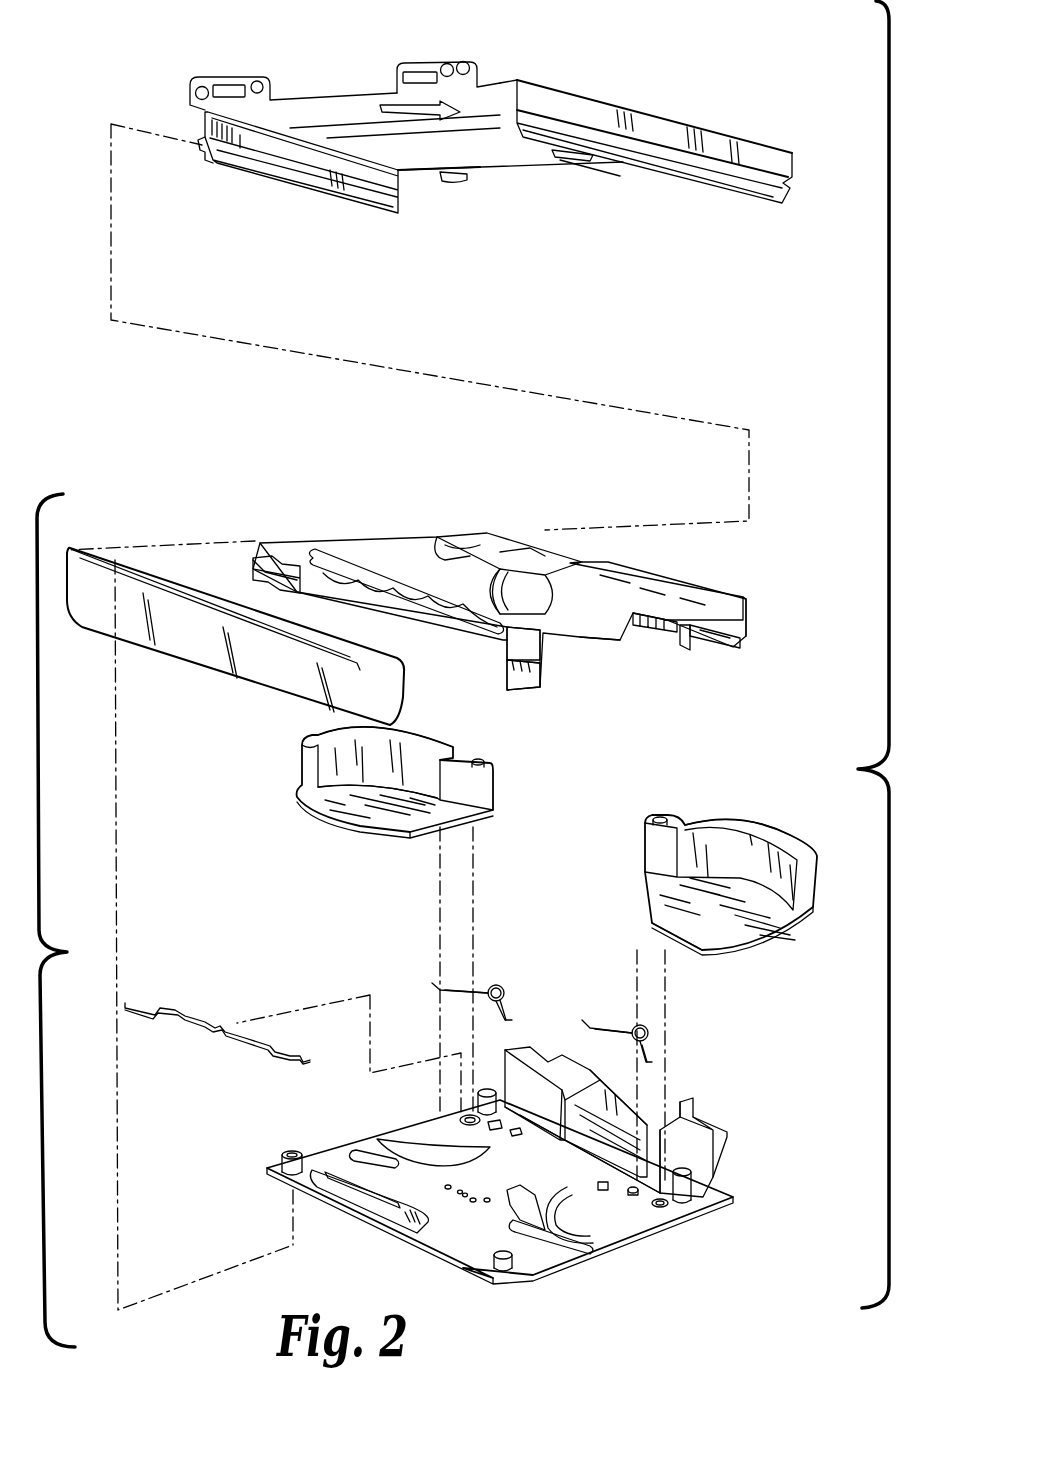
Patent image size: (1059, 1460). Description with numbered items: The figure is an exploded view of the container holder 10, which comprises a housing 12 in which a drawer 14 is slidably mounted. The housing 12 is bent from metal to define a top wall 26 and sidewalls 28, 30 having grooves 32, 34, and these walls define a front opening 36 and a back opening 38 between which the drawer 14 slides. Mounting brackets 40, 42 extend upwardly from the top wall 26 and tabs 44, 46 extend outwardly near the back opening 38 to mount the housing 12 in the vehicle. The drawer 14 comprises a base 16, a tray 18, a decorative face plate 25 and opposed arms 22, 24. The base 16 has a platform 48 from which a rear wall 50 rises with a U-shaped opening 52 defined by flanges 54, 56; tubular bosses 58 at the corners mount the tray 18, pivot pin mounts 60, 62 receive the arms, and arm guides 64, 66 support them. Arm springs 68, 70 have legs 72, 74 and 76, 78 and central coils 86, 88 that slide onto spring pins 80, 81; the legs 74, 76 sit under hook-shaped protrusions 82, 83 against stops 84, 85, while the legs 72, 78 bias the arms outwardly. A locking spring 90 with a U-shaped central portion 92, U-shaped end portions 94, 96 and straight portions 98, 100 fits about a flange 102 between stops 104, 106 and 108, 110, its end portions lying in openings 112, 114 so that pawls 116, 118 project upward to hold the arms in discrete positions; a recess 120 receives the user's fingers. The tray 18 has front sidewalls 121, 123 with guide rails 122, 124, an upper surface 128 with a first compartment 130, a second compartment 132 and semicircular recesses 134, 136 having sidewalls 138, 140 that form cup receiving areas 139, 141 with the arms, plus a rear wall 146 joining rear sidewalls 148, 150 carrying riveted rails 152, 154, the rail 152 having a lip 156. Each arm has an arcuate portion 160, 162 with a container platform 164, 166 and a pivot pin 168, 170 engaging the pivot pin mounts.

The container holder 10 is at (854, 654).
The housing 12 is at (603, 97).
The drawer 14 is at (66, 920).
The base 16 is at (400, 1250).
The tray 18 is at (487, 520).
The arm 22 is at (812, 911).
The arm 24 is at (295, 765).
The decorative face plate 25 is at (100, 552).
The top wall 26 is at (485, 160).
The sidewall 28 is at (730, 172).
The sidewall 30 is at (310, 175).
The groove 32 is at (513, 130).
The groove 34 is at (212, 165).
The front opening 36 is at (360, 117).
The back opening 38 is at (418, 210).
The mounting bracket 40 is at (455, 60).
The mounting bracket 42 is at (230, 80).
The tab 44 is at (660, 178).
The tab 46 is at (462, 183).
The platform 48 is at (535, 1285).
The rear wall 50 is at (530, 1070).
The U-shaped opening 52 is at (685, 1085).
The flange 54 is at (695, 1105).
The flange 56 is at (580, 1075).
The tubular bosses 58 is at (290, 1150).
The pivot pin mount 60 is at (665, 1205).
The pivot pin mount 62 is at (465, 1118).
The arm guide 64 is at (585, 1243).
The arm guide 66 is at (412, 1140).
The arm spring 68 is at (652, 1030).
The arm spring 70 is at (508, 982).
The leg 72 is at (650, 1042).
The leg 74 is at (605, 1025).
The leg 76 is at (505, 995).
The leg 78 is at (457, 985).
The spring pin 80 is at (633, 1195).
The spring pin 81 is at (495, 1130).
The hook-shaped protrusion 82 is at (603, 1193).
The hook-shaped protrusion 83 is at (517, 1135).
The stop 84 is at (610, 1176).
The stop 85 is at (503, 1123).
The central coil 86 is at (638, 1025).
The central coil 88 is at (490, 985).
The locking spring 90 is at (200, 990).
The U-shaped central portion 92 is at (220, 1025).
The U-shaped end portion 94 is at (298, 1056).
The U-shaped end portion 96 is at (148, 1010).
The straight portion 98 is at (270, 1046).
The straight portion 100 is at (195, 1022).
The flange 102 is at (460, 1200).
The stop 104 is at (487, 1202).
The stop 106 is at (473, 1202).
The stop 108 is at (450, 1190).
The stop 110 is at (445, 1180).
The opening 112 is at (553, 1248).
The opening 114 is at (365, 1152).
The pawl 116 is at (310, 1062).
The pawl 118 is at (126, 1003).
The recess 120 is at (365, 1200).
The front sidewall 121 is at (527, 690).
The guide rail 122 is at (545, 665).
The front sidewall 123 is at (260, 548).
The guide rail 124 is at (253, 573).
The upper surface 128 is at (530, 540).
The first compartment 130 is at (560, 553).
The second compartment 132 is at (326, 548).
The semicircular recess 134 is at (638, 595).
The semicircular recess 136 is at (360, 548).
The sidewall 138 is at (605, 635).
The cup receiving area 139 is at (572, 650).
The sidewall 140 is at (433, 548).
The cup receiving area 141 is at (395, 547).
The rear wall 146 is at (660, 630).
The rear sidewall 148 is at (746, 604).
The rear sidewall 150 is at (408, 548).
The rail 152 is at (690, 650).
The rail 154 is at (442, 548).
The lip 156 is at (735, 646).
The arcuate portion 160 is at (740, 818).
The arcuate portion 162 is at (410, 745).
The container platform 164 is at (735, 950).
The container platform 166 is at (360, 822).
The pivot pin 168 is at (660, 812).
The pivot pin 170 is at (483, 760).